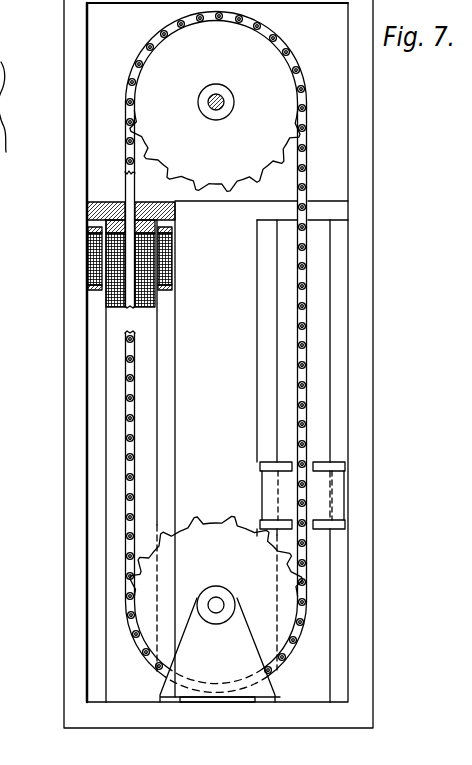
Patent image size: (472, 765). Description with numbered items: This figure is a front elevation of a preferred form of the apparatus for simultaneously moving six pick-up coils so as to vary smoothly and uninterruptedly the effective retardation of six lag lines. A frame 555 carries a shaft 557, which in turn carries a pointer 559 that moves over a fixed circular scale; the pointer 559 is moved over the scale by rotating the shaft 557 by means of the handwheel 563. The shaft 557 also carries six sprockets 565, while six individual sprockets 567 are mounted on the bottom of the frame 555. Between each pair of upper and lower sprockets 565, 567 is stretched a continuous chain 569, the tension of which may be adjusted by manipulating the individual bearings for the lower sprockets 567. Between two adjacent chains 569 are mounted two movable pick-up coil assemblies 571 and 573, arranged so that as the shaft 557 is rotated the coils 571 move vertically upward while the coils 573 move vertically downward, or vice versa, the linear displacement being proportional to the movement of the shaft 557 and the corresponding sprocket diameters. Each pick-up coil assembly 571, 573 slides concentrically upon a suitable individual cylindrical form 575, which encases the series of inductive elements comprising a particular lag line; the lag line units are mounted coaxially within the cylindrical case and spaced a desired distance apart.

The frame 555 is at (373, 193).
The shaft 557 is at (217, 101).
The pointer 559 is at (13, 94).
The handwheel 563 is at (20, 162).
The sprockets 565 is at (215, 151).
The individual sprockets 567 is at (216, 609).
The continuous chain 569 is at (125, 394).
The movable pick-up coil assembly 571 is at (103, 254).
The movable pick-up coil assembly 573 is at (338, 489).
The cylindrical form 575 is at (280, 330).